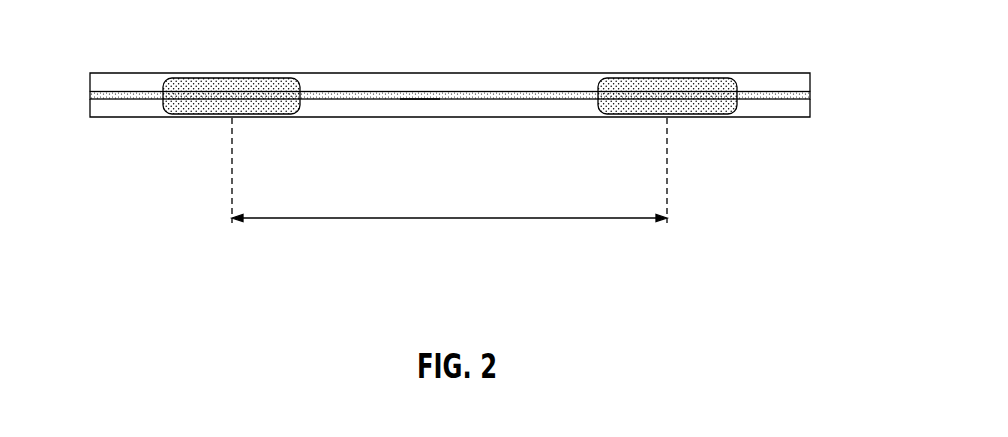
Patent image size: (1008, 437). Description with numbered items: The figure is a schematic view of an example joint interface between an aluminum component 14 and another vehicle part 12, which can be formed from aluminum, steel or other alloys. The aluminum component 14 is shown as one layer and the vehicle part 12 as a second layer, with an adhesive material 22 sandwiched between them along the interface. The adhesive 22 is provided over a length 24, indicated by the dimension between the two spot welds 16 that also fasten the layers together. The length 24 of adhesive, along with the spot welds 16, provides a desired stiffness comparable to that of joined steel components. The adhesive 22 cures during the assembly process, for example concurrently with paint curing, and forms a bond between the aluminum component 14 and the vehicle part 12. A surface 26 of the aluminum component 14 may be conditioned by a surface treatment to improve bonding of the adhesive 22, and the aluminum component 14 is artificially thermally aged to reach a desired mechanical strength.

The vehicle part 12 is at (517, 110).
The aluminum component 14 is at (528, 82).
The spot weld 16 is at (232, 83).
The adhesive material 22 is at (370, 96).
The length 24 is at (453, 219).
The surface 26 is at (421, 94).